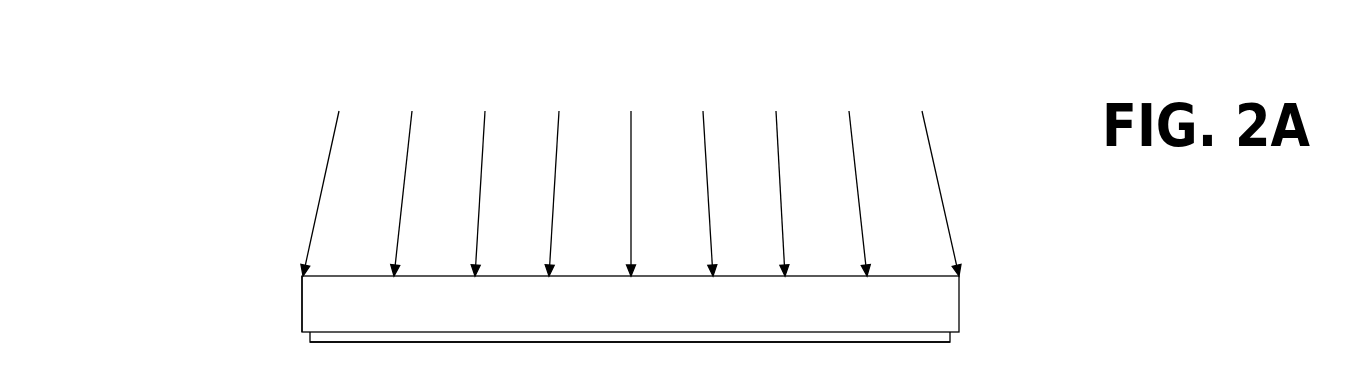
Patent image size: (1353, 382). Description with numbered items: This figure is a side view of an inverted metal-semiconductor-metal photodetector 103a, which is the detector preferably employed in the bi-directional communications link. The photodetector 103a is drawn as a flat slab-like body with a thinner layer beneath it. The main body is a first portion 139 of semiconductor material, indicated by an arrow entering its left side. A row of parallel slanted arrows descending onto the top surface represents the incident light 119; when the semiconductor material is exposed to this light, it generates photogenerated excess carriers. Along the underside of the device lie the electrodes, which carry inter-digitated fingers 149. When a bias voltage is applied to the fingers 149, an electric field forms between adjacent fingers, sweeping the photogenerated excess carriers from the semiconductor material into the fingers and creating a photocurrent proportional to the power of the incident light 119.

The inverted metal-semiconductor-metal (MSM) photodetector 103a is at (1030, 300).
The incident light 119 is at (948, 186).
The first portion of semiconductor material 139 is at (312, 295).
The inter-digitated fingers 149 is at (630, 357).